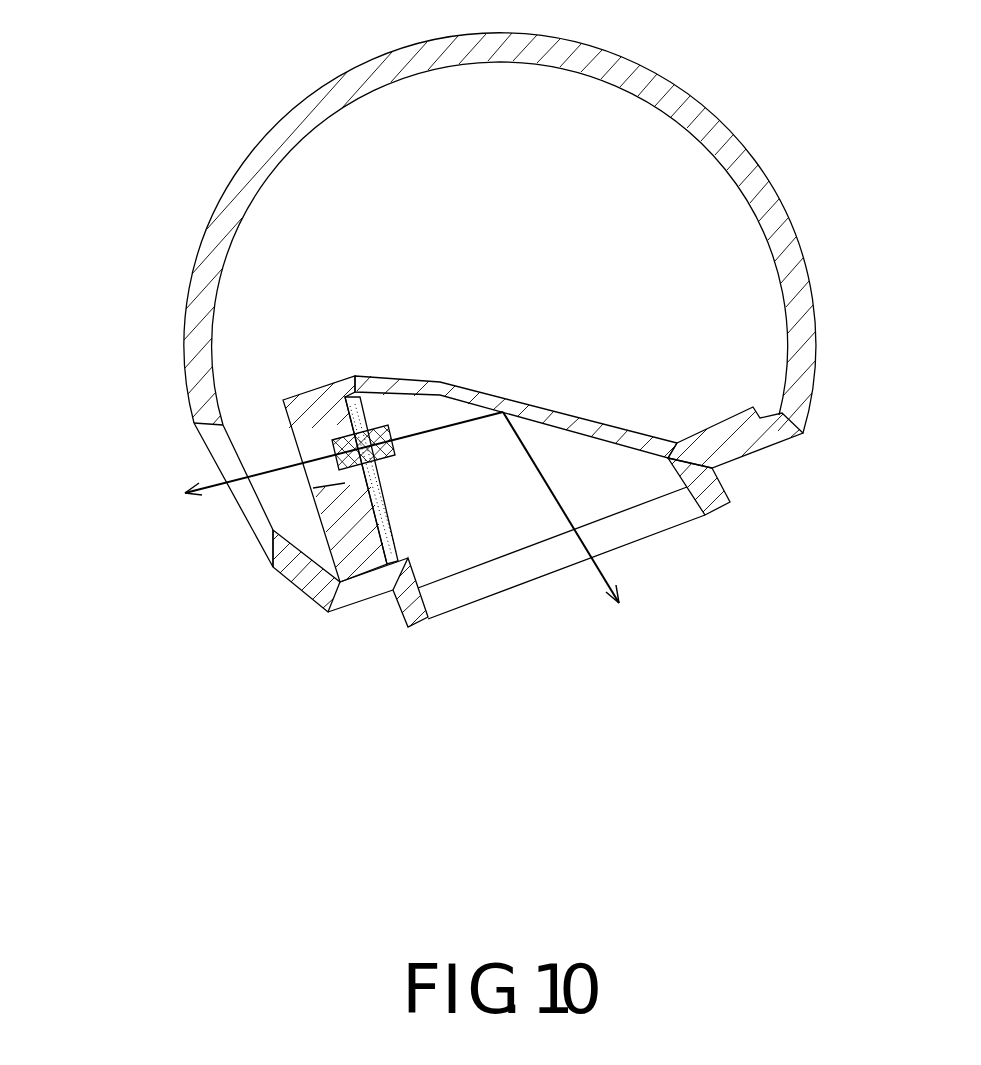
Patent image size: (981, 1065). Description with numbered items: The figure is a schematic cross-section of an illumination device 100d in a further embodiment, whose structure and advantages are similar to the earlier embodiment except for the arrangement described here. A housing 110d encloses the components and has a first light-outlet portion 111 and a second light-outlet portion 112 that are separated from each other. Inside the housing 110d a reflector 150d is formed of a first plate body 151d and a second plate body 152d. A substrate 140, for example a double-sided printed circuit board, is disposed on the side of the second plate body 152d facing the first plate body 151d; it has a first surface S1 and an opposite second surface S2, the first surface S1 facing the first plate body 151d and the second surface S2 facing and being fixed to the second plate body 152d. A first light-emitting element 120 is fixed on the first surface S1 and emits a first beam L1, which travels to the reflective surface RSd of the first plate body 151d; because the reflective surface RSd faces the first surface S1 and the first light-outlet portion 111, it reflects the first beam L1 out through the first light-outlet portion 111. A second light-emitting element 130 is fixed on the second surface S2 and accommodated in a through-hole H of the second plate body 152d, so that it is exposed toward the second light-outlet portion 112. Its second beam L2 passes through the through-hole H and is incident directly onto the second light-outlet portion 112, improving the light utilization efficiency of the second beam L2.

The illumination device 100d is at (143, 34).
The housing 110d is at (684, 94).
The first light-outlet portion 111 is at (692, 522).
The second light-outlet portion 112 is at (247, 508).
The first light-emitting element 120 is at (405, 452).
The second light-emitting element 130 is at (332, 441).
The substrate 140 is at (388, 562).
The reflector 150d is at (101, 305).
The first plate body 151d is at (433, 378).
The second plate body 152d is at (313, 400).
The through-hole H is at (297, 453).
The first beam L1 is at (594, 580).
The second beam L2 is at (200, 494).
The reflective surface RSd is at (646, 461).
The first surface S1 is at (410, 549).
The second surface S2 is at (273, 533).